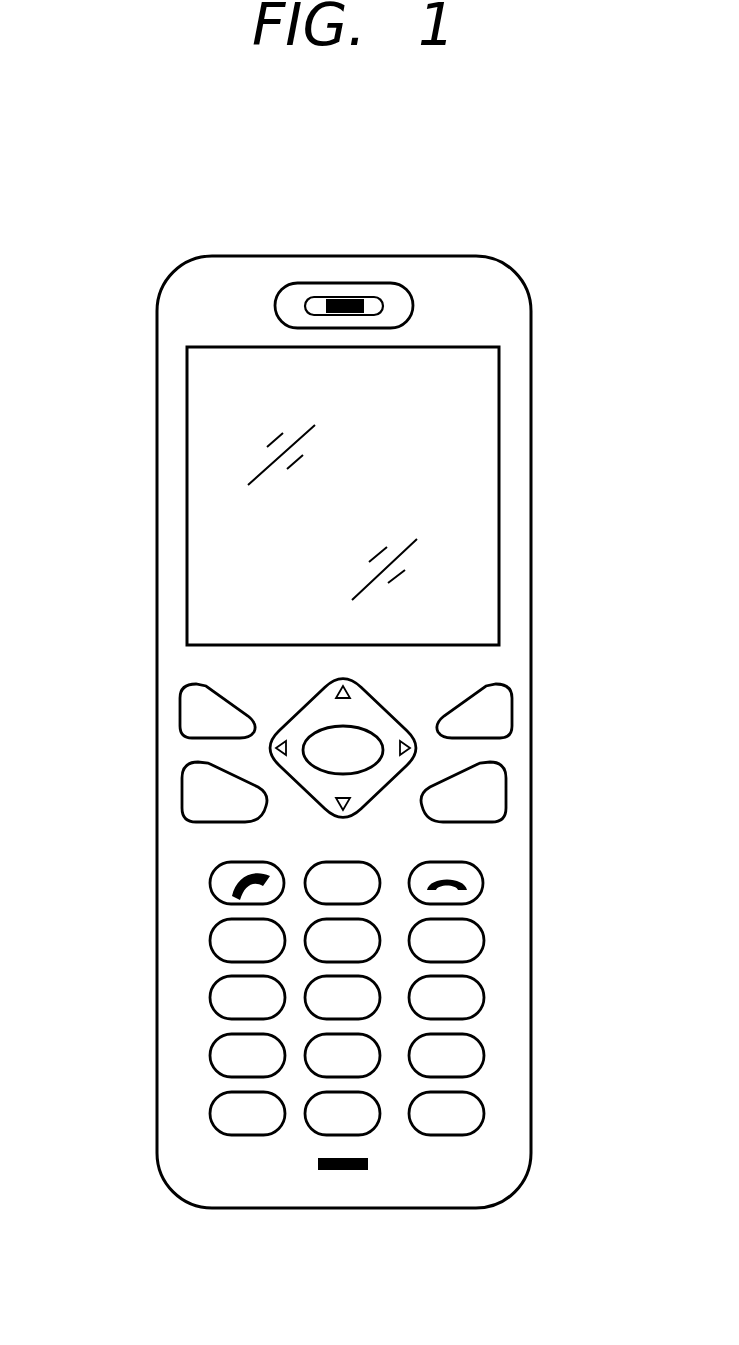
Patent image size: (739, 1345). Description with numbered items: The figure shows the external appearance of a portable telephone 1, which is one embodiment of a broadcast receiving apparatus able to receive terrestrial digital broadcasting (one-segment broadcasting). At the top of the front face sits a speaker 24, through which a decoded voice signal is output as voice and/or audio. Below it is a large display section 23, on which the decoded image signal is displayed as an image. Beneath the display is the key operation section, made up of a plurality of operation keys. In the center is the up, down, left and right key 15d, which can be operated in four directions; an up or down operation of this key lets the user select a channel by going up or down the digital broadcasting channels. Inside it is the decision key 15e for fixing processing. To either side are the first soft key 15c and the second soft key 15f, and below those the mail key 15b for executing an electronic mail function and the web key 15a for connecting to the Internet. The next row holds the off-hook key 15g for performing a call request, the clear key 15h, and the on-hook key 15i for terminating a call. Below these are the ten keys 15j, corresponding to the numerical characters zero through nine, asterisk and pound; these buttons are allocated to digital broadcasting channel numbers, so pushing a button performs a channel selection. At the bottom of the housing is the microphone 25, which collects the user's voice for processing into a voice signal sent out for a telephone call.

The portable telephone 1 is at (157, 186).
The speaker 24 is at (349, 288).
The display section 23 is at (442, 485).
The up, down, left and right key 15d is at (302, 720).
The decision key 15e is at (366, 738).
The soft 1 key 15c is at (186, 710).
The soft 2 key 15f is at (508, 717).
The mail key 15b is at (188, 795).
The web key 15a is at (497, 785).
The off-hook key 15g is at (212, 885).
The clear key 15h is at (352, 866).
The on-hook key 15i is at (480, 880).
The ten keys 15j is at (178, 1000).
The microphone 25 is at (343, 1172).